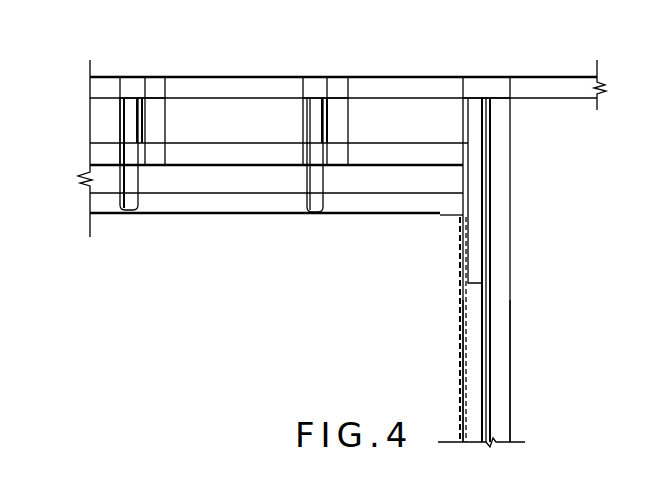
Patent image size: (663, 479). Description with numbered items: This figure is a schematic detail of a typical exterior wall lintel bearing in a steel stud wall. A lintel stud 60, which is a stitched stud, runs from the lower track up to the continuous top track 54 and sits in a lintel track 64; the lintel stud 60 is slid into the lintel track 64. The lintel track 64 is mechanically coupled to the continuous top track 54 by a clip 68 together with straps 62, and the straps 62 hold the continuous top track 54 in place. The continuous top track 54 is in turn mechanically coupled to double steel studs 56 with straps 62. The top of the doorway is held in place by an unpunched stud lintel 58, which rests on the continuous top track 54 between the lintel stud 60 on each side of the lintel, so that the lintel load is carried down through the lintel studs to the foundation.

The continuous top track 54 is at (303, 122).
The double steel studs 56 is at (193, 76).
The unpunched stud lintel 58 is at (431, 183).
The lintel stud 60 is at (502, 200).
The straps 62 is at (490, 115).
The lintel track 64 is at (510, 323).
The clip 68 is at (457, 218).